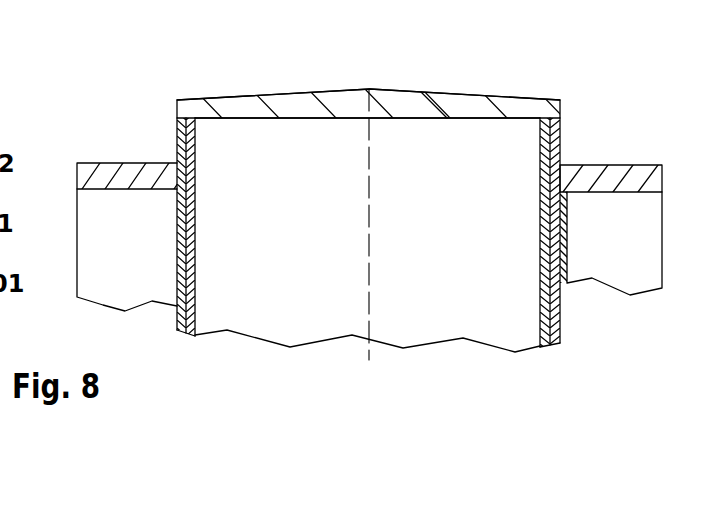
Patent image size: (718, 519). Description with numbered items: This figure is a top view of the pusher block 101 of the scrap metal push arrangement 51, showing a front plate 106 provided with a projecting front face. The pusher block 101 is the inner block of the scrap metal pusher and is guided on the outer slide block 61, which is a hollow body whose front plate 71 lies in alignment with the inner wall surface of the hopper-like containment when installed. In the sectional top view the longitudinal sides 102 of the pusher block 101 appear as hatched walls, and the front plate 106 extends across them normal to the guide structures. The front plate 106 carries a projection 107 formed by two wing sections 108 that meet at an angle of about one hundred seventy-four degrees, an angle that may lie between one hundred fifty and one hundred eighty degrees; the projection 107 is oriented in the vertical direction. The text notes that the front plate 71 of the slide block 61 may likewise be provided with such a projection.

The longitudinal sides 102 is at (167, 177).
The front plate 106 is at (258, 112).
The projection 107 is at (370, 90).
The wing section 108 is at (448, 95).
The pusher block 101 is at (482, 118).
The scrap metal push arrangement 51 is at (538, 86).
The slide block 61 is at (592, 177).
The front plate 71 is at (628, 179).